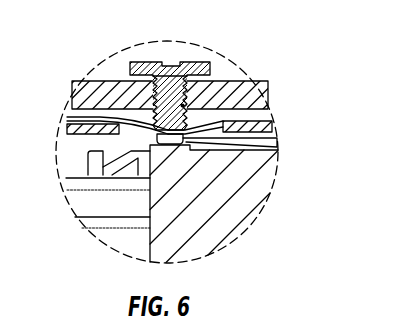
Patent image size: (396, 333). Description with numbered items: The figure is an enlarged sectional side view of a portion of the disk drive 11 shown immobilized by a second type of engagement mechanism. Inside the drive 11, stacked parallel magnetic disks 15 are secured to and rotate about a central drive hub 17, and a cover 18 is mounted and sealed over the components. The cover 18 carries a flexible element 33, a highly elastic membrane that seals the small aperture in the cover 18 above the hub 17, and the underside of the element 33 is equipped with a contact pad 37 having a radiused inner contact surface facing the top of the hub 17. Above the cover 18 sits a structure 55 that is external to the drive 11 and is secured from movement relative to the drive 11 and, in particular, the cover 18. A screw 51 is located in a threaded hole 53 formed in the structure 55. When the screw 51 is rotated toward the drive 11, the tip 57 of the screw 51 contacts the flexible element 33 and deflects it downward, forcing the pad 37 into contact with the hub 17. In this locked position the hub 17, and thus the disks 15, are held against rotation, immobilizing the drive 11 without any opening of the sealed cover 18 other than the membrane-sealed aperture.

The disk drive 11 is at (74, 67).
The magnetic disks 15 is at (92, 216).
The central drive hub 17 is at (216, 204).
The cover 18 is at (268, 123).
The flexible element 33 is at (188, 122).
The contact pad 37 is at (277, 146).
The screw 51 is at (192, 63).
The threaded hole 53 is at (183, 105).
The structure 55 is at (232, 96).
The tip of screw 57 is at (156, 113).